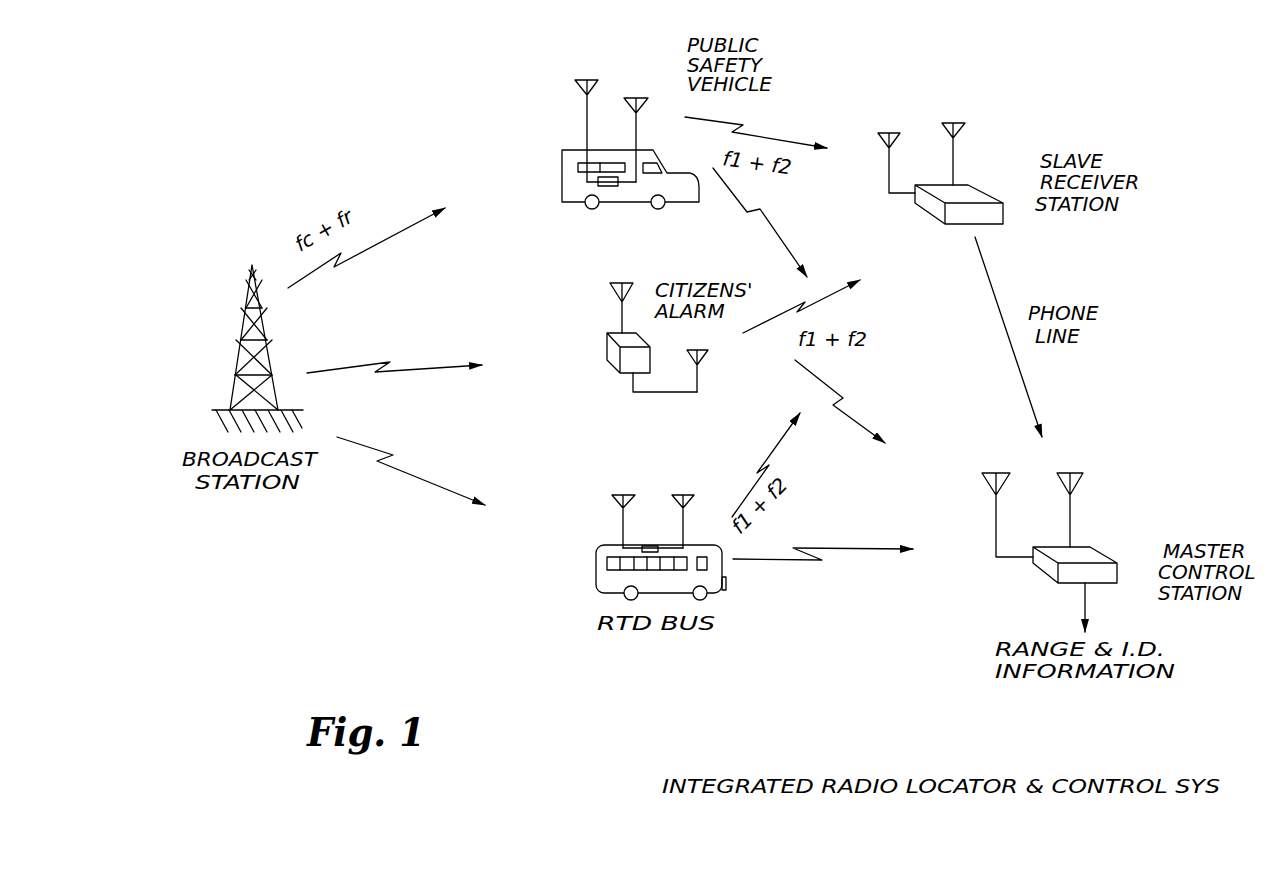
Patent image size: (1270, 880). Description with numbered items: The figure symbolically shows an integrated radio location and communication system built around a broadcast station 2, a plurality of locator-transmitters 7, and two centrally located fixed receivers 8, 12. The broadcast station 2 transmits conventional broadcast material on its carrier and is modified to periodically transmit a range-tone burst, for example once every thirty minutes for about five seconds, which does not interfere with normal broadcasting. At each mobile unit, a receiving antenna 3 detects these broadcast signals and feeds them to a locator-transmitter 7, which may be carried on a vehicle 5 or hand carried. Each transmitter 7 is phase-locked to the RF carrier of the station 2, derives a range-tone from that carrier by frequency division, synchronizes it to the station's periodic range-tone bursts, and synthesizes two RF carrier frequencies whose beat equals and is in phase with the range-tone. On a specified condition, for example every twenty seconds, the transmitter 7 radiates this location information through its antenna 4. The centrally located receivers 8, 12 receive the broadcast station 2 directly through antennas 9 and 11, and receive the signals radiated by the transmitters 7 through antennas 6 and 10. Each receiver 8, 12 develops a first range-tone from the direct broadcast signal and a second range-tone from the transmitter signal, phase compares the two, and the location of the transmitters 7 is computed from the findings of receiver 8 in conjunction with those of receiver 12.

The broadcast station 2 is at (242, 320).
The receiving antenna 3 is at (583, 80).
The antenna 4 is at (636, 98).
The vehicle 5 is at (562, 155).
The antenna 6 is at (953, 123).
The locator-transmitter 7 is at (612, 186).
The receiver 8 is at (985, 195).
The antenna 9 is at (893, 133).
The antenna 10 is at (1073, 473).
The antenna 11 is at (990, 473).
The receiver 12 is at (1097, 550).